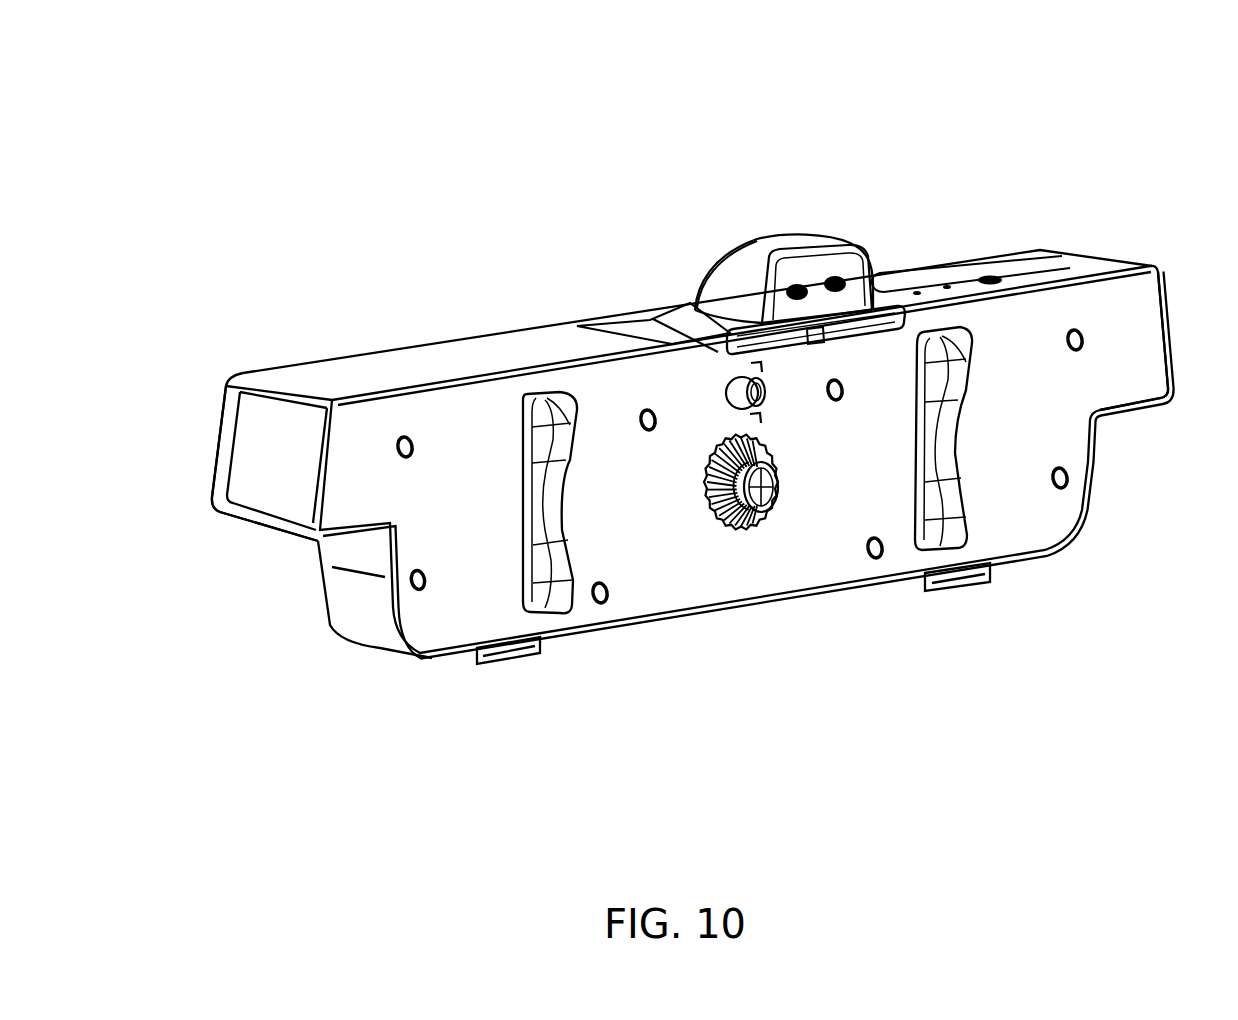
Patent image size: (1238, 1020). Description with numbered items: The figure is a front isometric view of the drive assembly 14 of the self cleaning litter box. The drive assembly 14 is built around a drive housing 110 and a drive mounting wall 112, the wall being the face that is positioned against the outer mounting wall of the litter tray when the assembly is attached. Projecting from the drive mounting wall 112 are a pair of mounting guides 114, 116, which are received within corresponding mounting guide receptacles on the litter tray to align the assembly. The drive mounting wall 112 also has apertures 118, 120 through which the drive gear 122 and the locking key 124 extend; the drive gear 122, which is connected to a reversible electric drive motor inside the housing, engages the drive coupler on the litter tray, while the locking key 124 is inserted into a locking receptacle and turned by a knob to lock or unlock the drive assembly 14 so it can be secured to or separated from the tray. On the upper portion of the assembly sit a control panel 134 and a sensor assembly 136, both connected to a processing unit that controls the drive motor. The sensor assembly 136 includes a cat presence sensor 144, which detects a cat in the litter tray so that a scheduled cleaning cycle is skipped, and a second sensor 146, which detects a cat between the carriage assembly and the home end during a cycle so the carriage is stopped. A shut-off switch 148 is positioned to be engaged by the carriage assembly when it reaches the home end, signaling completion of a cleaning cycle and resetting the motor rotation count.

The drive assembly 14 is at (254, 184).
The drive housing 110 is at (248, 497).
The drive mounting wall 112 is at (1131, 302).
The mounting guide 114 is at (565, 605).
The mounting guide 116 is at (967, 523).
The aperture 118 is at (728, 386).
The aperture 120 is at (717, 528).
The drive gear 122 is at (757, 530).
The locking key 124 is at (708, 316).
The control panel 134 is at (982, 265).
The sensor assembly 136 is at (778, 268).
The cat presence sensor 144 is at (769, 256).
The second sensor 146 is at (833, 270).
The shut-off switch 148 is at (820, 332).